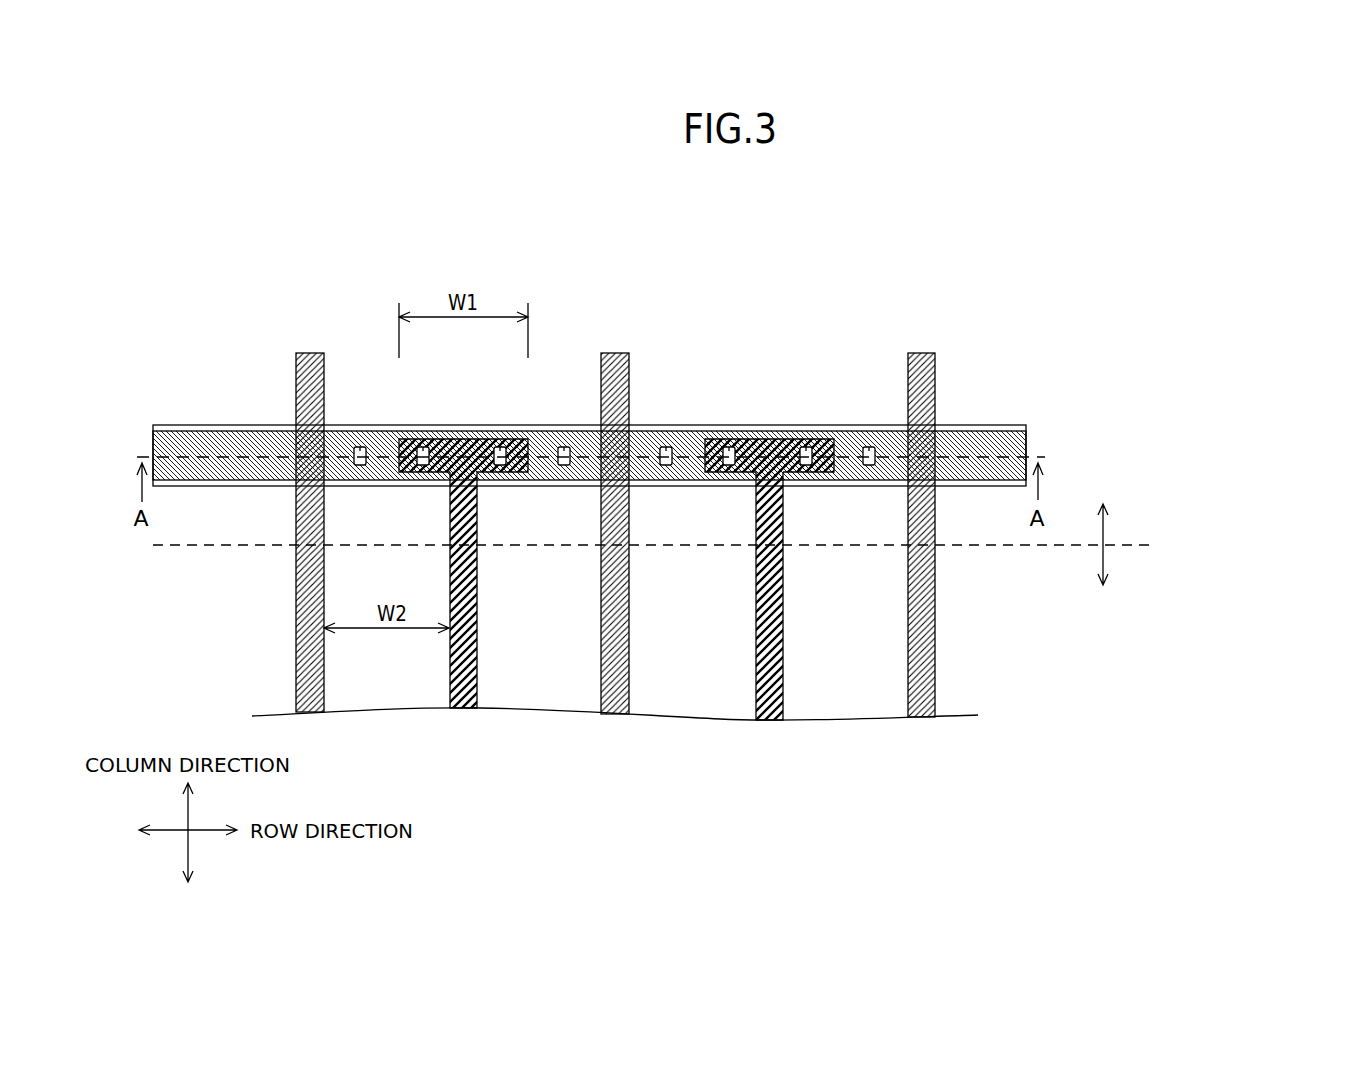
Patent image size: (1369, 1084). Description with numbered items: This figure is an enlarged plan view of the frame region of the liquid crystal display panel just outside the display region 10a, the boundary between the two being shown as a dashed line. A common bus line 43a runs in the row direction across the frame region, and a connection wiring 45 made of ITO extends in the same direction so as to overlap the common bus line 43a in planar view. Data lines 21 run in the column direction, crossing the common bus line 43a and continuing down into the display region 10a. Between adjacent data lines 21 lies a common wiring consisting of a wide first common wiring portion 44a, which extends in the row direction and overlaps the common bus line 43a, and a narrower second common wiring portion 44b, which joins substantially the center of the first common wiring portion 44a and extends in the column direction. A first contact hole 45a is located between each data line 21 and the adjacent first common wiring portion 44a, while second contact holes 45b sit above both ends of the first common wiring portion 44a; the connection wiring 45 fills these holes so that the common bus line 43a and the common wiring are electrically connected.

The data line 21 is at (306, 358).
The common bus line 43a is at (218, 437).
The first common wiring portion 44a is at (460, 438).
The second common wiring portion 44b is at (470, 636).
The connection wiring 45 is at (986, 425).
The first contact hole 45a is at (360, 446).
The second contact hole 45b is at (423, 440).
The display region 10a is at (743, 549).